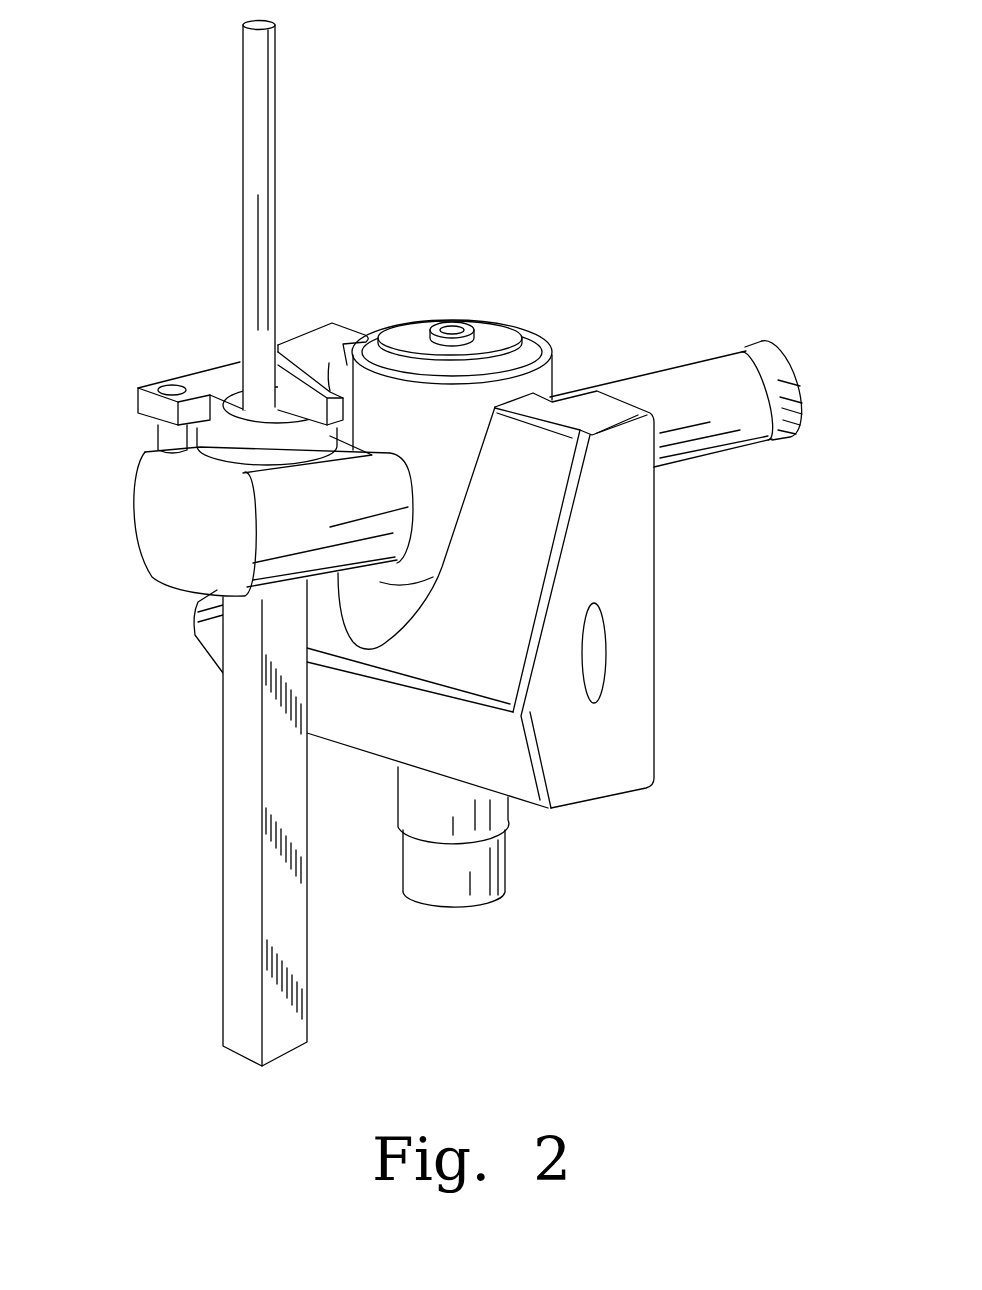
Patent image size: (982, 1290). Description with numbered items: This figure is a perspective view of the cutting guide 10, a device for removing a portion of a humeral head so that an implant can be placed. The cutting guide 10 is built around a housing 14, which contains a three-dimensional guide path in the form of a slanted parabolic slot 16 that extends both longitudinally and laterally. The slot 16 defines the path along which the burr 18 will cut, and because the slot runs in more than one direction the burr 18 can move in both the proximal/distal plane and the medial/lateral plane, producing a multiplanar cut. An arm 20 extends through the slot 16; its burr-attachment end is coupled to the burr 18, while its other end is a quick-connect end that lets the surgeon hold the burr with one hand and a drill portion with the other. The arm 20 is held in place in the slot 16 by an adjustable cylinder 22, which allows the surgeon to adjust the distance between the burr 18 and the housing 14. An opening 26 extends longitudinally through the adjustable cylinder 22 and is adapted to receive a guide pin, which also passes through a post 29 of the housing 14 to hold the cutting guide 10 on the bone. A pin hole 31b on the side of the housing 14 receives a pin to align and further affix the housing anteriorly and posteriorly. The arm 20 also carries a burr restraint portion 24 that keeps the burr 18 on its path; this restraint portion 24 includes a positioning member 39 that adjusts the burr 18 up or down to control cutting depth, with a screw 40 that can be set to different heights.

The cutting guide 10 is at (606, 259).
The housing 14 is at (640, 517).
The slanted parabolic slot 16 is at (388, 621).
The burr 18 is at (235, 743).
The arm 20 is at (698, 377).
The adjustable cylinder 22 is at (555, 368).
The burr restraint portion 24 is at (143, 513).
The opening 26 is at (455, 310).
The post 29 is at (493, 862).
The pin hole 31b is at (597, 655).
The positioning member 39 is at (207, 376).
The screw 40 is at (172, 387).